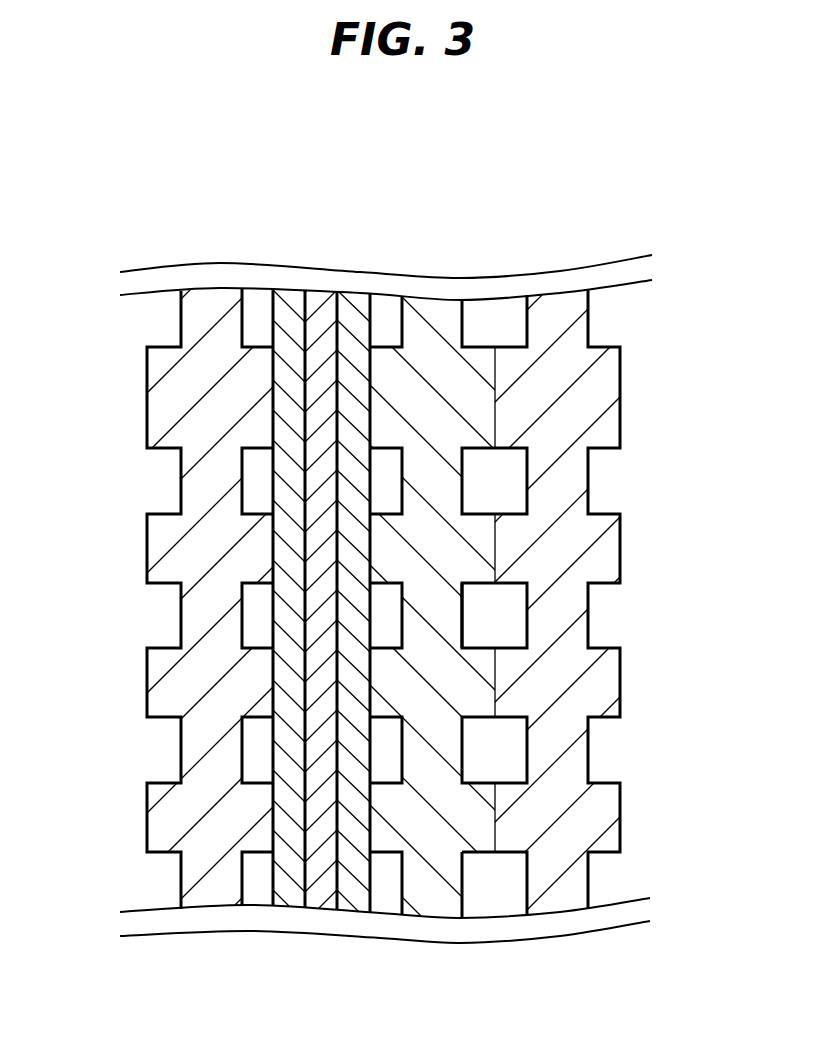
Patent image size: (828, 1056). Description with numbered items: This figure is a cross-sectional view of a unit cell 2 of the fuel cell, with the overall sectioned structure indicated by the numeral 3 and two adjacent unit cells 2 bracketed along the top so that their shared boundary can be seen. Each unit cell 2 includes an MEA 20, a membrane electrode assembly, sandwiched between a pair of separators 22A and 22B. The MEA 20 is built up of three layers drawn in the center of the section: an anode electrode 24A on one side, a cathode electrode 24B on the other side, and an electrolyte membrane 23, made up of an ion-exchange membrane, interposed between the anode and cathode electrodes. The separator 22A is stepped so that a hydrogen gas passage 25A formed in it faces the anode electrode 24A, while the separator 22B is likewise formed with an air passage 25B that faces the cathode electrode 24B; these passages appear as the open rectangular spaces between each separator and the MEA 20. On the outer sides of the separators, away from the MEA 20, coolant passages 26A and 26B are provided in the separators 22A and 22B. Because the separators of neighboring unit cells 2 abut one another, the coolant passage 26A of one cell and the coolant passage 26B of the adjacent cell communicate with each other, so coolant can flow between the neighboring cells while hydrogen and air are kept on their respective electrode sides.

The unit cell 2 is at (652, 230).
The electrode assembly 3 is at (96, 174).
The MEA 20 is at (324, 668).
The separator 22A is at (218, 895).
The separator 22B is at (437, 898).
The electrolyte membrane 23 is at (320, 895).
The anode electrode 24A is at (288, 898).
The cathode electrode 24B is at (368, 649).
The hydrogen gas passage 25A is at (262, 472).
The air passage 25B is at (390, 483).
The coolant passage 26A is at (527, 626).
The coolant passage 26B is at (462, 622).